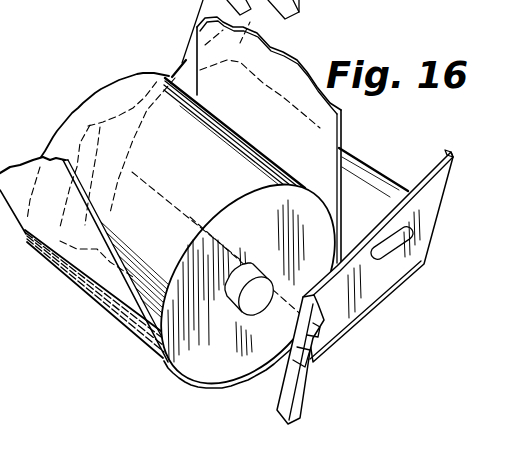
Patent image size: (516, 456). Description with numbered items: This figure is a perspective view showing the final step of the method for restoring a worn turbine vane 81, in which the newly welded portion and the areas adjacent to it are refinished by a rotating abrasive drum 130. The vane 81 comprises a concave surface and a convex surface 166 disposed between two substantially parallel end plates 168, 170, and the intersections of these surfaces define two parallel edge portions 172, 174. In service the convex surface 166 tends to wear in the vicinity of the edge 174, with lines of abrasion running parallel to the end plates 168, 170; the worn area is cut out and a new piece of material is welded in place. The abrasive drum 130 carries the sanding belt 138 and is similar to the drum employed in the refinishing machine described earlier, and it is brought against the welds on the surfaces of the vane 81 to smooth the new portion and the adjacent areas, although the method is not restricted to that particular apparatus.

The abrasive drum 130 is at (150, 366).
The end plate 170 is at (173, 70).
The sanding belt 138 is at (318, 134).
The edge portion 172 is at (377, 162).
The convex surface 166 is at (375, 212).
The end plate 168 is at (378, 256).
The turbine vane 81 is at (351, 356).
The edge portion 174 is at (258, 385).